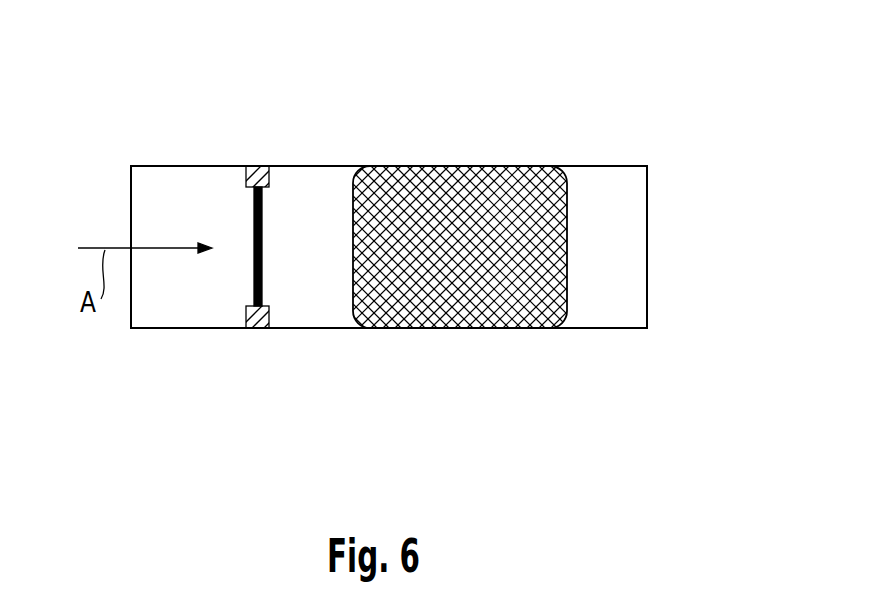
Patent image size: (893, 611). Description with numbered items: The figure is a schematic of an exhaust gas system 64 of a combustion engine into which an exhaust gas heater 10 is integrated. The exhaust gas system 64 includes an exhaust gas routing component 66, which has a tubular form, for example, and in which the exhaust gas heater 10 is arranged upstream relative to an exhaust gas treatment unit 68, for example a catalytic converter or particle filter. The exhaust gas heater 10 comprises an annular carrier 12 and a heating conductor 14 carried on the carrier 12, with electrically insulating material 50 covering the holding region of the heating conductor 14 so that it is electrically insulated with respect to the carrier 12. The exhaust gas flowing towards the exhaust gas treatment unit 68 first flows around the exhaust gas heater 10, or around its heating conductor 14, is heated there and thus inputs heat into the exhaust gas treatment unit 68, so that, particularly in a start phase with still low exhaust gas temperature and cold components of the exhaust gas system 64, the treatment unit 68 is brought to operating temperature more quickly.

The exhaust gas heater 10 is at (228, 248).
The carrier 12 is at (270, 179).
The heating conductor 14 is at (254, 222).
The electrically insulating material 50 is at (260, 328).
The exhaust gas system 64 is at (607, 145).
The exhaust gas routing component 66 is at (337, 328).
The exhaust gas treatment unit 68 is at (567, 260).